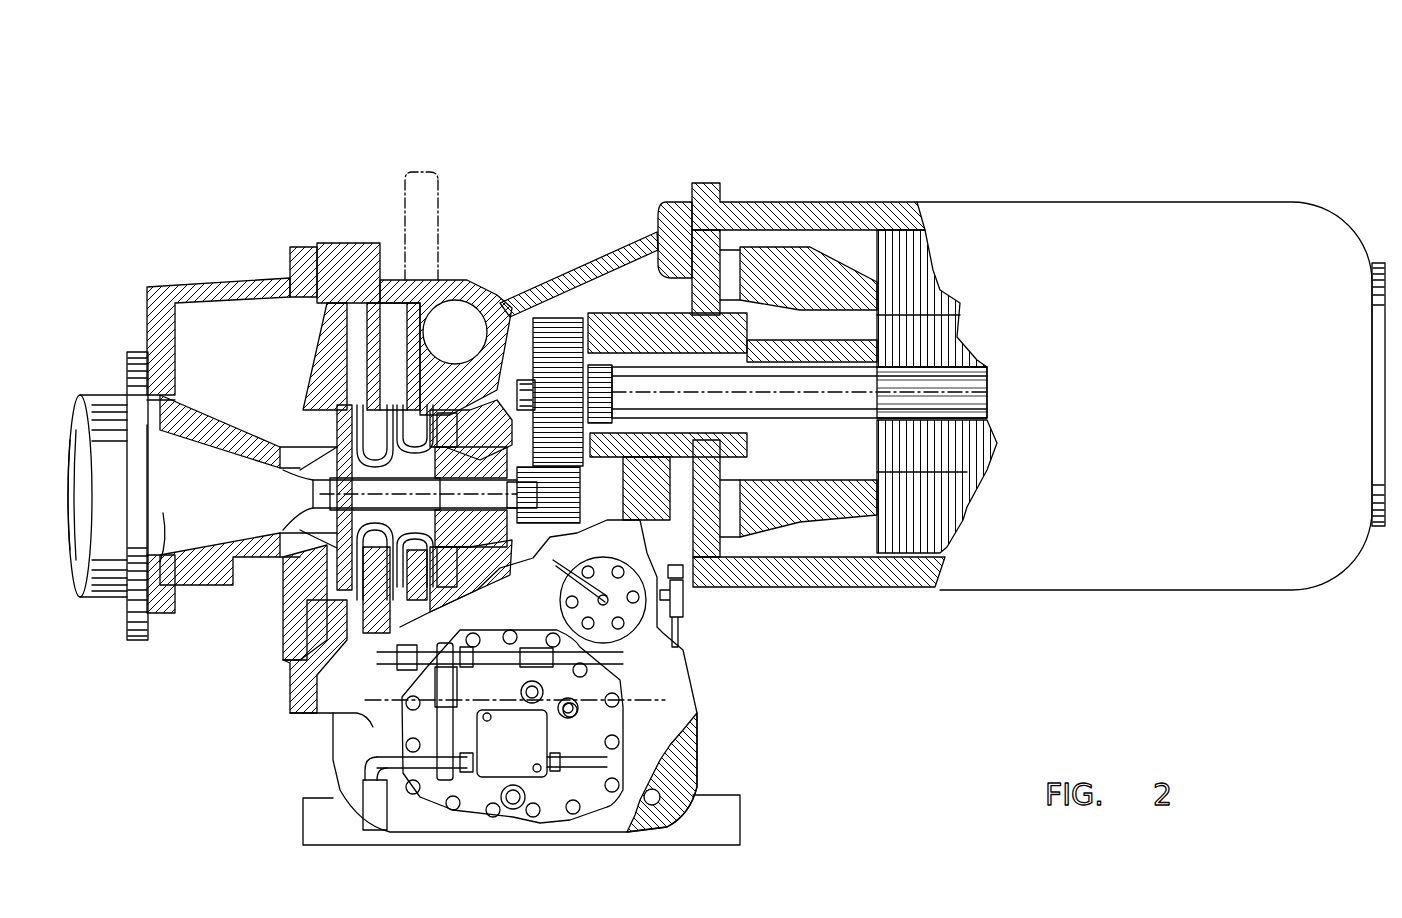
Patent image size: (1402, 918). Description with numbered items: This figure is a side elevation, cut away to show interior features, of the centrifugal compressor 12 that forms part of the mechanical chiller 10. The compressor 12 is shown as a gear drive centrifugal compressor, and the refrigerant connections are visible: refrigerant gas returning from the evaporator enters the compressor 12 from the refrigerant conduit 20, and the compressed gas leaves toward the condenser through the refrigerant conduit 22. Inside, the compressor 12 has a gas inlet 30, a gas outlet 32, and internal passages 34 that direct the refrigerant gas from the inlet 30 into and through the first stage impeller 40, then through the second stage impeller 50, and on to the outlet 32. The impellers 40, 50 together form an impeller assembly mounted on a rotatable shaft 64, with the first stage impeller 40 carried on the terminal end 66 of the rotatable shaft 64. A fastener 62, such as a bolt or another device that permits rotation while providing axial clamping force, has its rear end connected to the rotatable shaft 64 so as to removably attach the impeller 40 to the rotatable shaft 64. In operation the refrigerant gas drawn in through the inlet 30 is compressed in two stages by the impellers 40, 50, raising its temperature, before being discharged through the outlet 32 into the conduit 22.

The mechanical chiller 10 is at (980, 165).
The compressor 12 is at (1232, 200).
The refrigerant conduit 20 is at (112, 393).
The refrigerant conduit 22 is at (440, 192).
The gas inlet 30 is at (150, 580).
The gas outlet 32 is at (395, 278).
The internal passages 34 is at (340, 332).
The first stage impeller 40 is at (320, 557).
The second stage impeller 50 is at (500, 310).
The fastener 62 is at (313, 497).
The rotatable shaft 64 is at (323, 613).
The terminal end 66 is at (293, 560).